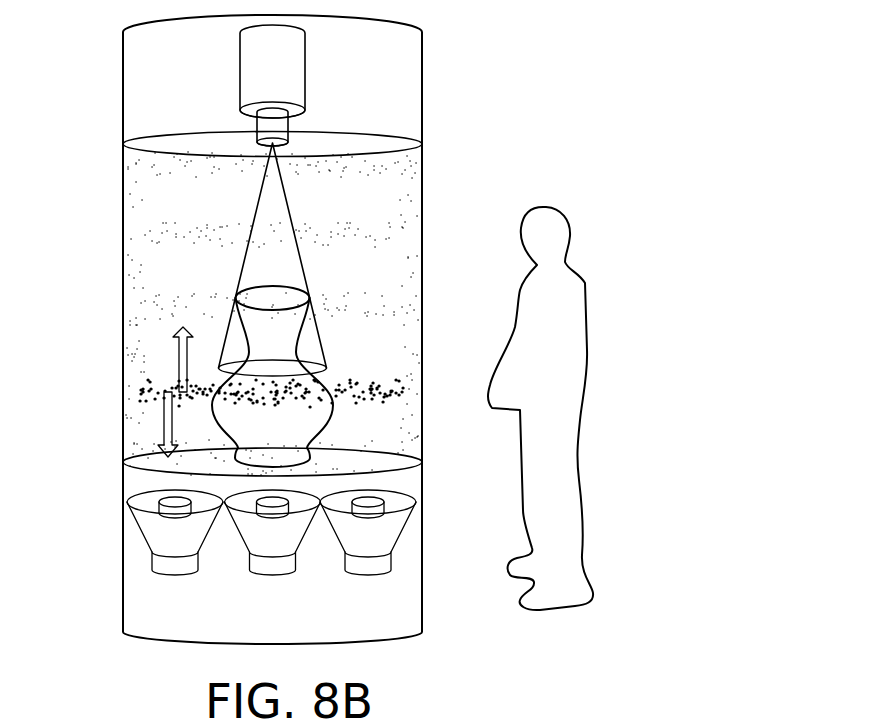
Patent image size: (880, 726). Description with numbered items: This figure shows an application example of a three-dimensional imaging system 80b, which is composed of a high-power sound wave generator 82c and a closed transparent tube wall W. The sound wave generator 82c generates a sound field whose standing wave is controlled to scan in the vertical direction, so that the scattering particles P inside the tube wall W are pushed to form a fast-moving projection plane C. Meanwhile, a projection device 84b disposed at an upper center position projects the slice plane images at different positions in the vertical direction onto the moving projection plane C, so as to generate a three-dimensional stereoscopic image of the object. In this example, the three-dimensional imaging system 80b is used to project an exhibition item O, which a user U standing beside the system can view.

The projection device 84b is at (270, 67).
The closed transparent tube wall W is at (123, 222).
The scattering particles P is at (153, 383).
The projection plane C is at (327, 366).
The exhibition item O is at (320, 422).
The high-power sound wave generator 82c is at (167, 538).
The user U is at (582, 322).
The three-dimensional imaging system 80b is at (542, 660).